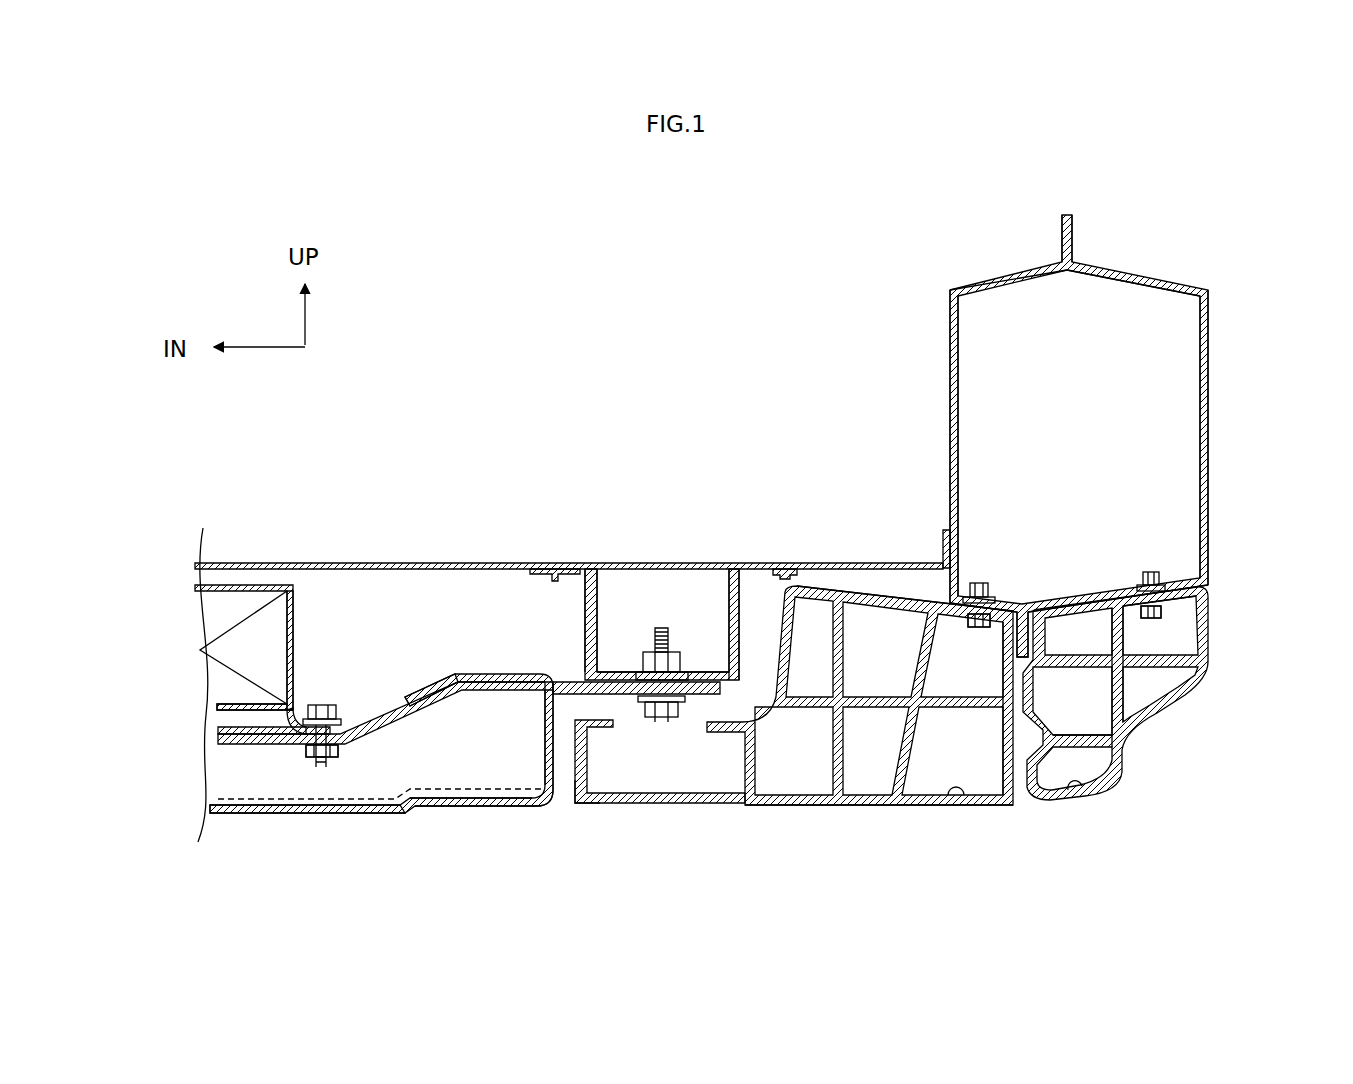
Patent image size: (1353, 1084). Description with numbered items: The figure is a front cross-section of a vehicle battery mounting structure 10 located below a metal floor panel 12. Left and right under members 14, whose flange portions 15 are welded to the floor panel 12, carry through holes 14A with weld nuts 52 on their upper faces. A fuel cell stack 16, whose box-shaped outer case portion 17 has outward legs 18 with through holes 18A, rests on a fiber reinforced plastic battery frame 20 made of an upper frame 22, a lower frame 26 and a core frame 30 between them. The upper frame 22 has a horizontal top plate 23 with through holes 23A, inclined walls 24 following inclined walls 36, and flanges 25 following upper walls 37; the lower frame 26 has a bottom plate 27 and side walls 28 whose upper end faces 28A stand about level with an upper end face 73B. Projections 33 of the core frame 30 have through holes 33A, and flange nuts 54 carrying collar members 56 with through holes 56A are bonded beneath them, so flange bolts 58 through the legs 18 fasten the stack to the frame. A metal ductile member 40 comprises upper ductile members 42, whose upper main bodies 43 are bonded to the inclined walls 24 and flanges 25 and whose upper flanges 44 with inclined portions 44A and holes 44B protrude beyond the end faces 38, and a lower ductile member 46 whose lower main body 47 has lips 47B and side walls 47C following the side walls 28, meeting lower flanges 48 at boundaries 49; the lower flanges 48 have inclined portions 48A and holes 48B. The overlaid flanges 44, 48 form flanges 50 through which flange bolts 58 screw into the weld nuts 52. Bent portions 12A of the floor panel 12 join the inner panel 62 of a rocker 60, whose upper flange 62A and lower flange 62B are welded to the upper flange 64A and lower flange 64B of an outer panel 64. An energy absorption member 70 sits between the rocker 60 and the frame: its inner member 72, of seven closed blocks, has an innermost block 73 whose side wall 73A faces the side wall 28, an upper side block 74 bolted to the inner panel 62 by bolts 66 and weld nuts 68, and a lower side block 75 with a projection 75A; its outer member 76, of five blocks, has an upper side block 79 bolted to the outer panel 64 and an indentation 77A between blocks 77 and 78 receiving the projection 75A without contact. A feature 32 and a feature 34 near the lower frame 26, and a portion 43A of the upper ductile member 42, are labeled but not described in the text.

The vehicle battery mounting structure 10 is at (310, 836).
The floor panel 12 is at (403, 562).
The bent portion 12A is at (940, 558).
The under member 14 is at (744, 640).
The through hole 14A is at (650, 672).
The flange portion 15 is at (555, 569).
The fuel cell stack 16 is at (296, 598).
The outer case portion 17 is at (243, 585).
The leg 18 is at (352, 736).
The through hole 18A is at (302, 722).
The battery frame 20 is at (276, 816).
The upper frame 22 is at (442, 694).
The top plate 23 is at (225, 705).
The through hole 23A is at (337, 728).
The inclined wall 24 is at (436, 700).
The flange 25 is at (486, 678).
The lower frame 26 is at (353, 816).
The bottom plate 27 is at (225, 816).
The side wall 28 is at (556, 800).
The upper end face 28A is at (545, 725).
The core frame 30 is at (245, 768).
The reference line 32 is at (220, 800).
The projection 33 is at (218, 730).
The through hole 33A is at (282, 748).
The step portion 34 is at (414, 809).
The inclined wall 36 is at (385, 735).
The upper wall 37 is at (458, 700).
The end face 38 is at (549, 796).
The ductile member 40 is at (433, 683).
The upper ductile member 42 is at (522, 672).
The upper main body 43 is at (456, 686).
The upper wall end 43A is at (546, 675).
The upper flange 44 is at (742, 569).
The inclined portion 44A is at (590, 670).
The hole 44B is at (662, 700).
The lower ductile member 46 is at (556, 772).
The lower main body 47 is at (472, 822).
The lip 47B is at (414, 818).
The side wall 47C is at (536, 752).
The lower flange 48 is at (732, 732).
The inclined portion 48A is at (611, 718).
The hole 48B is at (707, 682).
The boundary 49 is at (540, 700).
The flange 50 is at (667, 696).
The weld nut 52 is at (662, 650).
The flange nut 54 is at (319, 758).
The collar member 56 is at (334, 749).
The through hole 56A is at (317, 720).
The flange bolt 58 is at (324, 719).
The rocker 60 is at (1138, 283).
The inner panel 62 is at (949, 330).
The upper flange 62A is at (1061, 240).
The lower flange 62B is at (1021, 600).
The outer panel 64 is at (1209, 355).
The upper flange 64A is at (1073, 240).
The lower flange 64B is at (1042, 608).
The bolt 66 is at (972, 628).
The weld nut 68 is at (985, 583).
The energy absorption member 70 is at (984, 688).
The inner member 72 is at (906, 806).
The block 73 is at (650, 804).
The side wall 73A is at (591, 768).
The upper end face 73B is at (591, 568).
The upper side block 74 is at (941, 592).
The lower side block 75 is at (976, 804).
The projection 75A is at (1005, 738).
The outer member 76 is at (1152, 718).
The lower side block 77 is at (1092, 655).
The indentation 77A is at (1058, 737).
The block 78 is at (1087, 796).
The upper side block 79 is at (1170, 592).